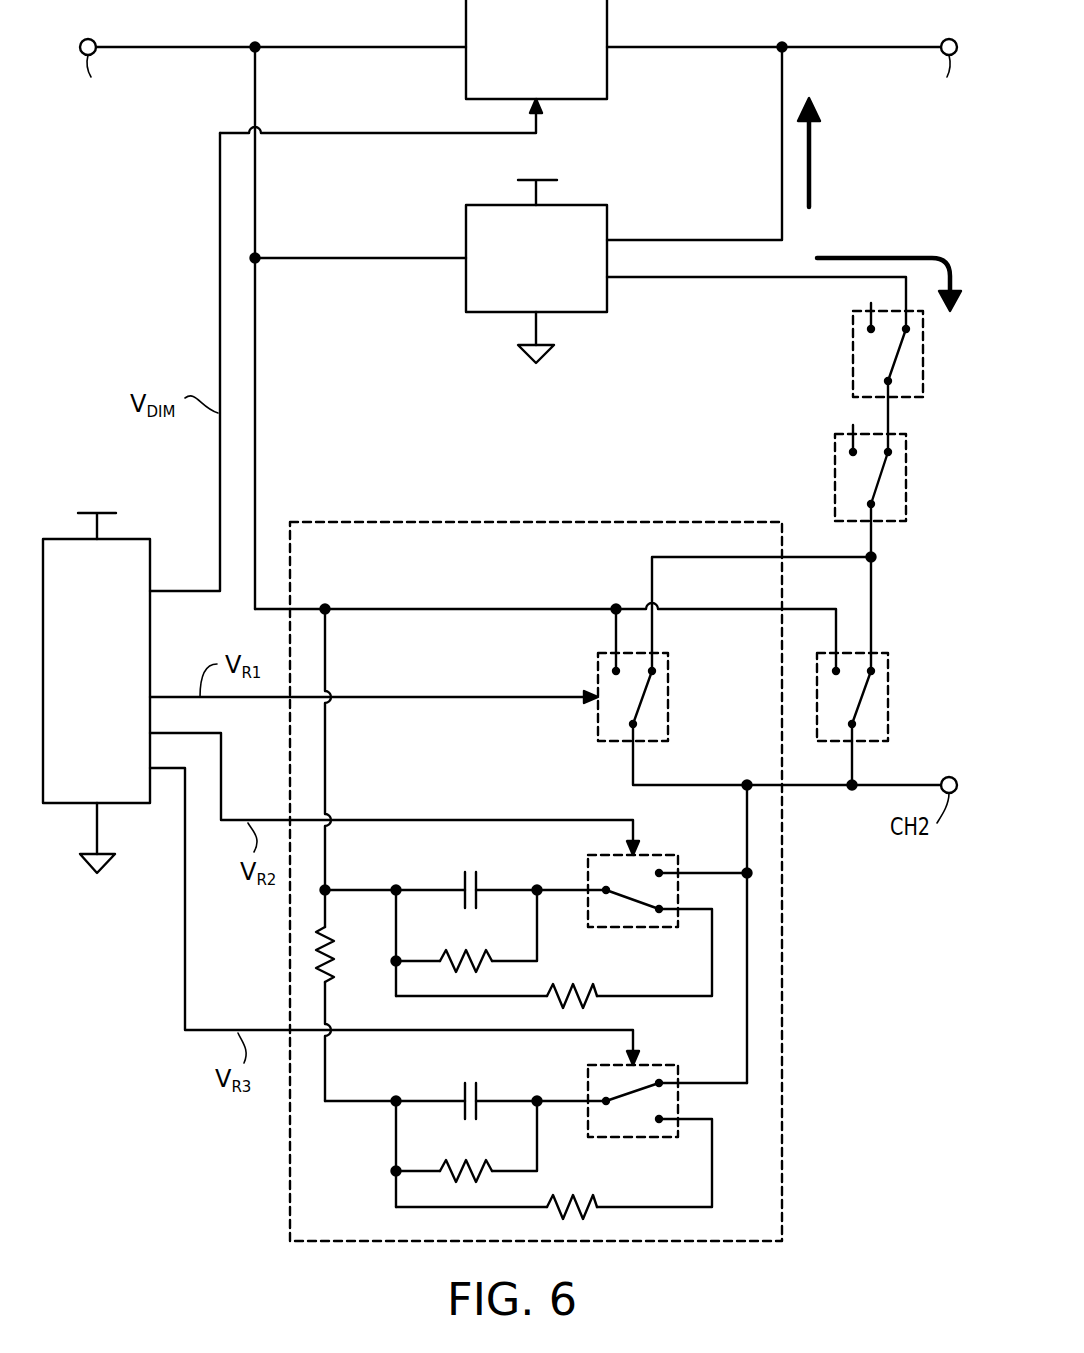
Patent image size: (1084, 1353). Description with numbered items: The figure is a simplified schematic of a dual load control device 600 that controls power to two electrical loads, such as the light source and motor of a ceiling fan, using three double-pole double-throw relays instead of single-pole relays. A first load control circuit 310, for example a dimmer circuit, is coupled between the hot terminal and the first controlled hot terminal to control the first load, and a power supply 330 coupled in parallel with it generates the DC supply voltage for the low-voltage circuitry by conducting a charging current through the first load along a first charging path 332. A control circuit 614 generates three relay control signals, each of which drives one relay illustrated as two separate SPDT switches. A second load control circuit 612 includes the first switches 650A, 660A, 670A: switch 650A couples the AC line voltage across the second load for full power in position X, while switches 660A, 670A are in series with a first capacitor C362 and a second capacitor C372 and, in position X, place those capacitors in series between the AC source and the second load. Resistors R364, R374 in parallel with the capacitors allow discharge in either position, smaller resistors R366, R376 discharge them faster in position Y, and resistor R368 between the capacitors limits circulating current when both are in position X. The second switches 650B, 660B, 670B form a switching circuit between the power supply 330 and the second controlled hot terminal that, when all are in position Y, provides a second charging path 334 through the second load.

The load control device 600 is at (146, 226).
The first load control circuit 310 is at (607, 80).
The power supply 330 is at (483, 298).
The first charging path 332 is at (812, 152).
The second charging path 334 is at (857, 257).
The second load control circuit 612 is at (561, 520).
The control circuit 614 is at (115, 780).
The first SPDT switch of first DPDT relay 650A is at (598, 720).
The second SPDT switch of first DPDT relay 650B is at (888, 720).
The first SPDT switch of second DPDT relay 660A is at (588, 873).
The second SPDT switch of second DPDT relay 660B is at (835, 470).
The first SPDT switch of third DPDT relay 670A is at (588, 1083).
The second SPDT switch of third DPDT relay 670B is at (853, 350).
The first capacitor C362 is at (464, 883).
The resistor R364 is at (440, 957).
The resistor R366 is at (585, 993).
The resistor R368 is at (335, 958).
The second capacitor C372 is at (464, 1093).
The resistor R374 is at (443, 1167).
The resistor R376 is at (585, 1203).